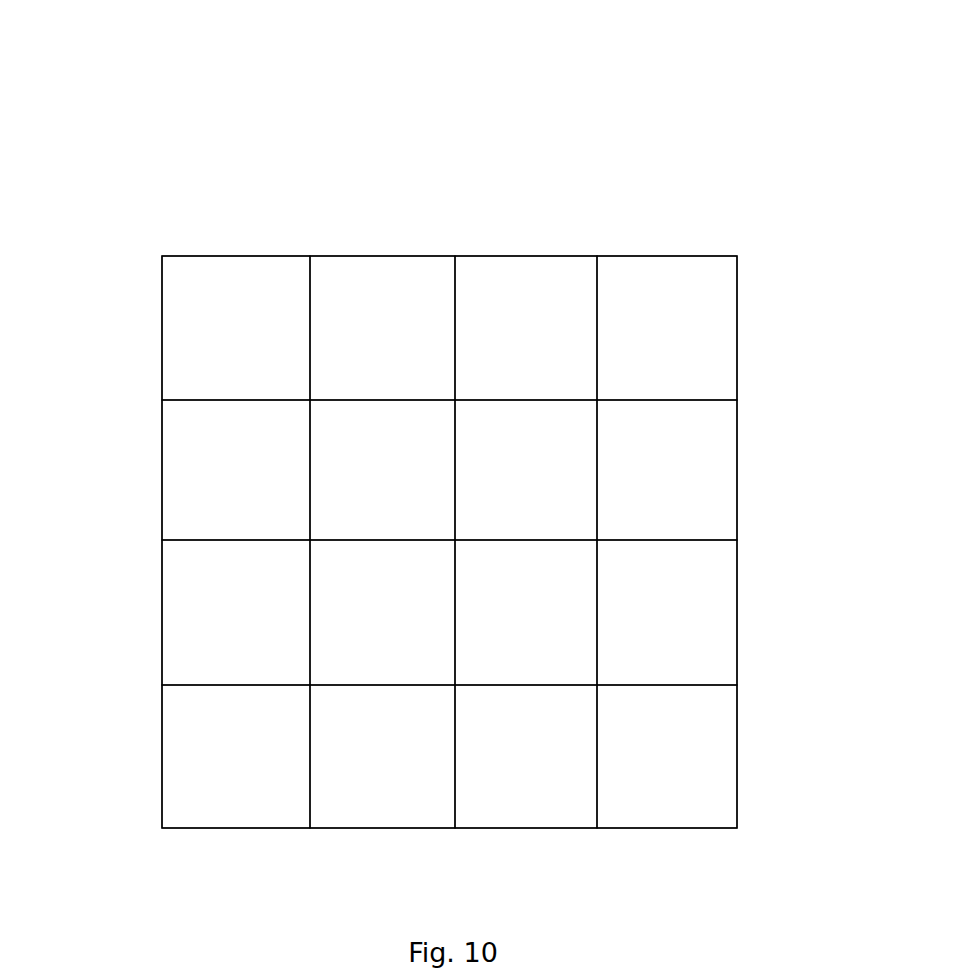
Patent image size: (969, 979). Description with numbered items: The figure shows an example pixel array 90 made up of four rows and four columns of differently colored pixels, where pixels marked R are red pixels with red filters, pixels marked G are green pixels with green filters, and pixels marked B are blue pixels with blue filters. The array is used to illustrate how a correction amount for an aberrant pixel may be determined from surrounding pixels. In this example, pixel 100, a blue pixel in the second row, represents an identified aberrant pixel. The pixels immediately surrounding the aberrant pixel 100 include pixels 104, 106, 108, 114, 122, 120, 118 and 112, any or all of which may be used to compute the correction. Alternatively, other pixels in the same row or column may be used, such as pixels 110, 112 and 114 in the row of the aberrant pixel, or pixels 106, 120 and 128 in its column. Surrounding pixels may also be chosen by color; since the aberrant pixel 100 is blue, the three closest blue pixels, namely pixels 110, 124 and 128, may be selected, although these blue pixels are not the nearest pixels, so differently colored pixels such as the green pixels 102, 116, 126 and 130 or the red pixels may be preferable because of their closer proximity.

The pixel array 90 is at (493, 202).
The identified aberrant pixel 100 is at (568, 446).
The pixel 102 is at (244, 275).
The pixel 104 is at (388, 283).
The pixel 106 is at (531, 280).
The pixel 108 is at (670, 285).
The pixel 110 is at (192, 453).
The pixel 112 is at (327, 512).
The pixel 114 is at (687, 513).
The pixel 116 is at (183, 643).
The pixel 118 is at (355, 671).
The pixel 120 is at (573, 664).
The pixel 122 is at (707, 631).
The pixel 124 is at (240, 810).
The pixel 126 is at (365, 808).
The pixel 128 is at (522, 803).
The pixel 130 is at (688, 792).